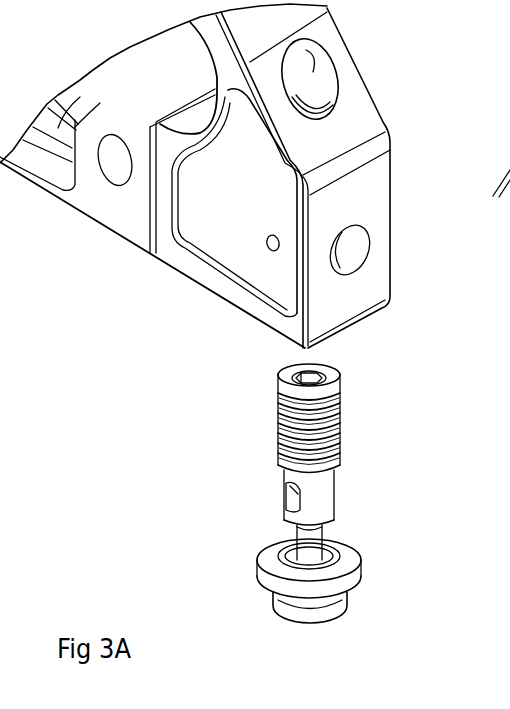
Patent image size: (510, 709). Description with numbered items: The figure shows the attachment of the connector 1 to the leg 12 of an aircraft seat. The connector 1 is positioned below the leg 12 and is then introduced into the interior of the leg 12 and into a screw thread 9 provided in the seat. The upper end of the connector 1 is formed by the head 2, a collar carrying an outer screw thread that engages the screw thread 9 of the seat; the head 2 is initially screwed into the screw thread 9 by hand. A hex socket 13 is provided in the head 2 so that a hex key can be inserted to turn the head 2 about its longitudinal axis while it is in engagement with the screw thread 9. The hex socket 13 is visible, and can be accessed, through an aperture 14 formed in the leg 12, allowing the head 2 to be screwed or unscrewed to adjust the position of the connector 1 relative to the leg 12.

The connector 1 is at (285, 482).
The head 2 is at (305, 407).
The screw thread 9 is at (290, 110).
The leg 12 is at (320, 181).
The hex socket 13 is at (307, 385).
The aperture 14 is at (310, 68).